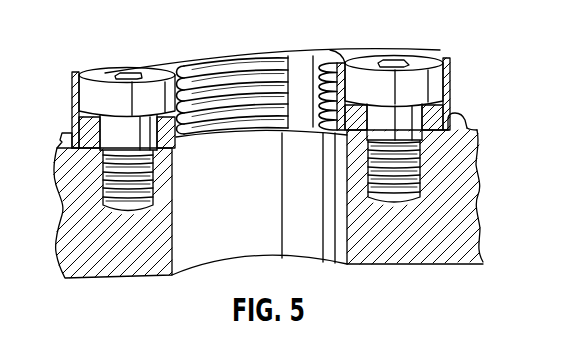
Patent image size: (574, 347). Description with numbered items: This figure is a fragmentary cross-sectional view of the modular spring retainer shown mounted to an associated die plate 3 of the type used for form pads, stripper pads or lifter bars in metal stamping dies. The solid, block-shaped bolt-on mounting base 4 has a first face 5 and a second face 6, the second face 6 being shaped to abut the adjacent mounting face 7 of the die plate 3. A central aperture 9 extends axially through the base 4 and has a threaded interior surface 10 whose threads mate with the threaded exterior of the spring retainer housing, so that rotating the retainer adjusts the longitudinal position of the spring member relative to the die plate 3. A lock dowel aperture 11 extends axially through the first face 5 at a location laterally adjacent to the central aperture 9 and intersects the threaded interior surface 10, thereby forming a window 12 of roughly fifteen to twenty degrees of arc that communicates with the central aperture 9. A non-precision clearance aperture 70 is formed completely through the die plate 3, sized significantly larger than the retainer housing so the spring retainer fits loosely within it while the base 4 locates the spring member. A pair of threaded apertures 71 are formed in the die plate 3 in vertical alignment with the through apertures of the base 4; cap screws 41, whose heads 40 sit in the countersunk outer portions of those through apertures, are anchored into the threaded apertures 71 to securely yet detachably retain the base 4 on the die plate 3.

The die plate 3 is at (474, 130).
The base 4 is at (378, 47).
The first face 5 is at (178, 63).
The second face 6 is at (470, 167).
The adjacent face 7 is at (465, 116).
The central aperture 9 is at (240, 60).
The threaded interior surface 10 is at (221, 82).
The lock dowel aperture 11 is at (333, 50).
The window 12 is at (298, 77).
The heads 40 is at (107, 72).
The cap screws 41 is at (113, 127).
The clearance aperture 70 is at (269, 216).
The threaded apertures 71 is at (105, 214).